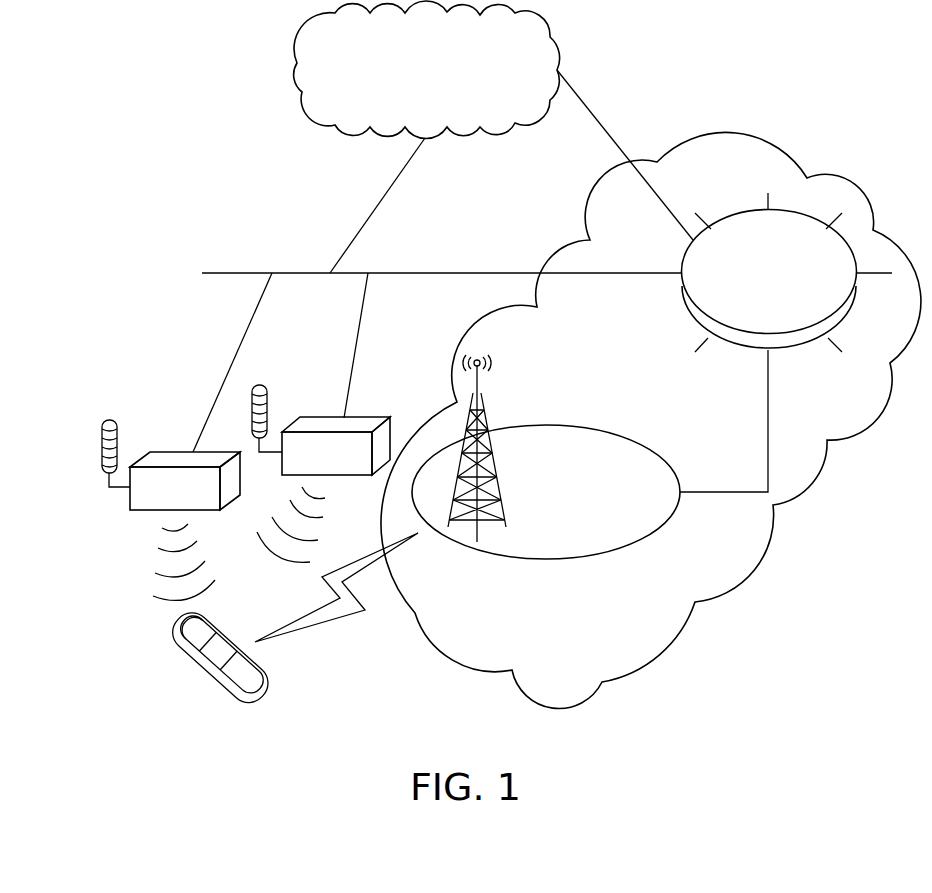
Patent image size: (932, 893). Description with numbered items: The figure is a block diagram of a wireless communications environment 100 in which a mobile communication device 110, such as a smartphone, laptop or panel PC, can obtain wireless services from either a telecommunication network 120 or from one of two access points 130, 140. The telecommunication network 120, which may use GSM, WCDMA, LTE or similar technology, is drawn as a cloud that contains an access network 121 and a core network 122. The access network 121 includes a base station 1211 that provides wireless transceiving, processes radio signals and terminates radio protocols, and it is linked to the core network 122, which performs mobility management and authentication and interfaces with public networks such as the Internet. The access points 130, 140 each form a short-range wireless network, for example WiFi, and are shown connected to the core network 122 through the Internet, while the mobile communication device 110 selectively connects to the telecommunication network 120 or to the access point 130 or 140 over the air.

The wireless communications environment 100 is at (107, 67).
The mobile communication device 110 is at (223, 695).
The telecommunication network 120 is at (830, 178).
The access network 121 is at (563, 560).
The base station 1211 is at (480, 412).
The core network 122 is at (735, 210).
The access point 130 is at (365, 417).
The access point 140 is at (172, 452).